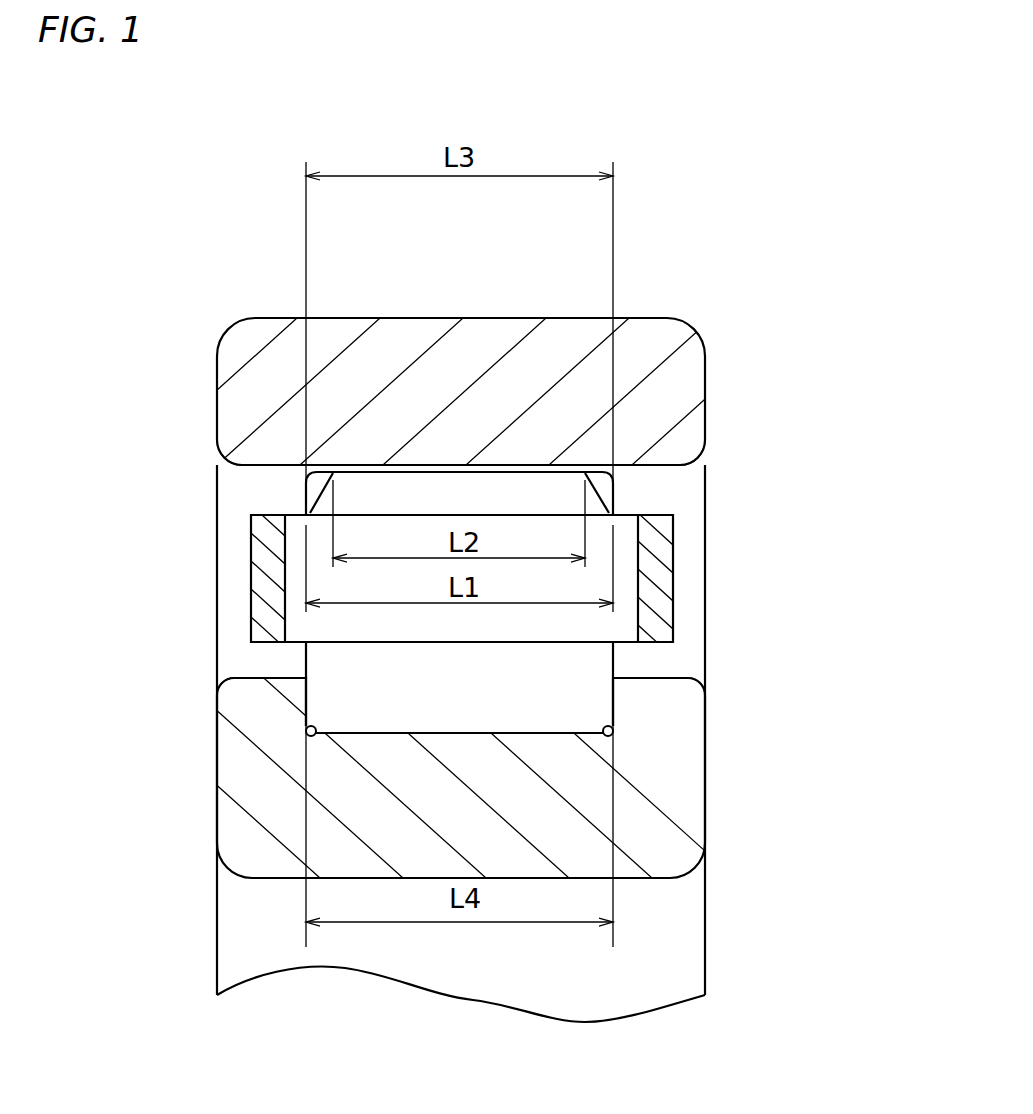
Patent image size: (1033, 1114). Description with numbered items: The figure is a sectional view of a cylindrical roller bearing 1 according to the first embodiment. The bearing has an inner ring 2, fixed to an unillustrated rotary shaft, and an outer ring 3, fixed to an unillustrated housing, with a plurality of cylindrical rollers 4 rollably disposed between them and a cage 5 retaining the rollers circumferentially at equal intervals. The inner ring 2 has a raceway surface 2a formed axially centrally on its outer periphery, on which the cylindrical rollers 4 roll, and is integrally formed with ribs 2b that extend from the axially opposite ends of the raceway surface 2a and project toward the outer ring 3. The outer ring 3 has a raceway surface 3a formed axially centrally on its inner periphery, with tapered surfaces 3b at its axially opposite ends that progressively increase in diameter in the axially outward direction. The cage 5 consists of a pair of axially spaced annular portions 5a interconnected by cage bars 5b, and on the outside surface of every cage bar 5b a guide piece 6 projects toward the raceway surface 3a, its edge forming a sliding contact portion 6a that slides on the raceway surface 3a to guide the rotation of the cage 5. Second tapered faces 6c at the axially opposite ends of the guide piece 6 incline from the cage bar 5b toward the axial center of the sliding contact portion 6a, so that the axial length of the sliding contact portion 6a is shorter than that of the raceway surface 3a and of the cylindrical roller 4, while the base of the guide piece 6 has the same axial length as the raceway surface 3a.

The cylindrical roller bearing 1 is at (703, 288).
The inner ring 2 is at (660, 790).
The raceway surface 2a is at (397, 733).
The ribs 2b is at (262, 673).
The outer ring 3 is at (670, 395).
The raceway surface 3a is at (418, 470).
The tapered surfaces 3b is at (258, 462).
The cylindrical rollers 4 is at (335, 663).
The cage 5 is at (680, 583).
The annular portions 5a is at (265, 558).
The cage bars 5b is at (625, 628).
The guide piece 6 is at (510, 488).
The sliding contact portion 6a is at (468, 476).
The second tapered faces 6c is at (308, 488).